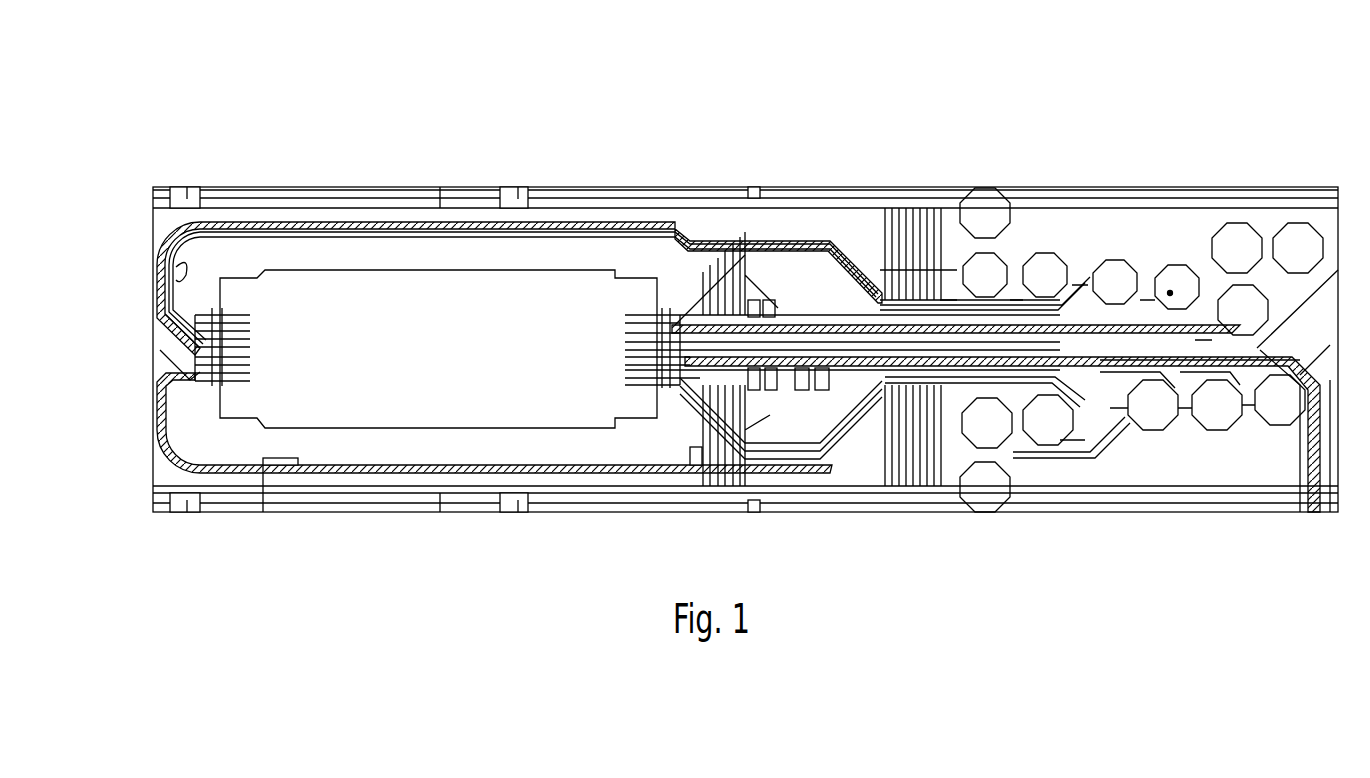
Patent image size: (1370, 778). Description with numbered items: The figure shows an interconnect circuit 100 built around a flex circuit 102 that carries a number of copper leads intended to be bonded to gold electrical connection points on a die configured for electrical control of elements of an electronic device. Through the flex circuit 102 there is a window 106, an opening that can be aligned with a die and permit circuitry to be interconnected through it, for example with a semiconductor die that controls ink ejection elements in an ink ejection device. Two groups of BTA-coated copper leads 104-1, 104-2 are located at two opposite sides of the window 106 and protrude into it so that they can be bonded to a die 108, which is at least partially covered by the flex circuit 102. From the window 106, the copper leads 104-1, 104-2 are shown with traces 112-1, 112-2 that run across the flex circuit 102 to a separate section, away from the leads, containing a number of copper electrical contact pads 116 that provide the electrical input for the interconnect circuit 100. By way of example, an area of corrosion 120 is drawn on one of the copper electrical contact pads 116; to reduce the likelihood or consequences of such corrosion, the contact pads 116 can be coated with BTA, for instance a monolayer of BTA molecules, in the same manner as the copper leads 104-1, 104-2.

The interconnect circuit 100 is at (248, 110).
The flex circuit 102 is at (151, 246).
The BTA-coated copper leads 104-1 is at (255, 312).
The BTA-coated copper leads 104-2 is at (622, 312).
The window 106 is at (380, 434).
The die 108 is at (442, 355).
The traces 112-1 is at (210, 390).
The traces 112-2 is at (668, 390).
The copper electrical contact pads 116 is at (1297, 530).
The area of corrosion 120 is at (1176, 278).